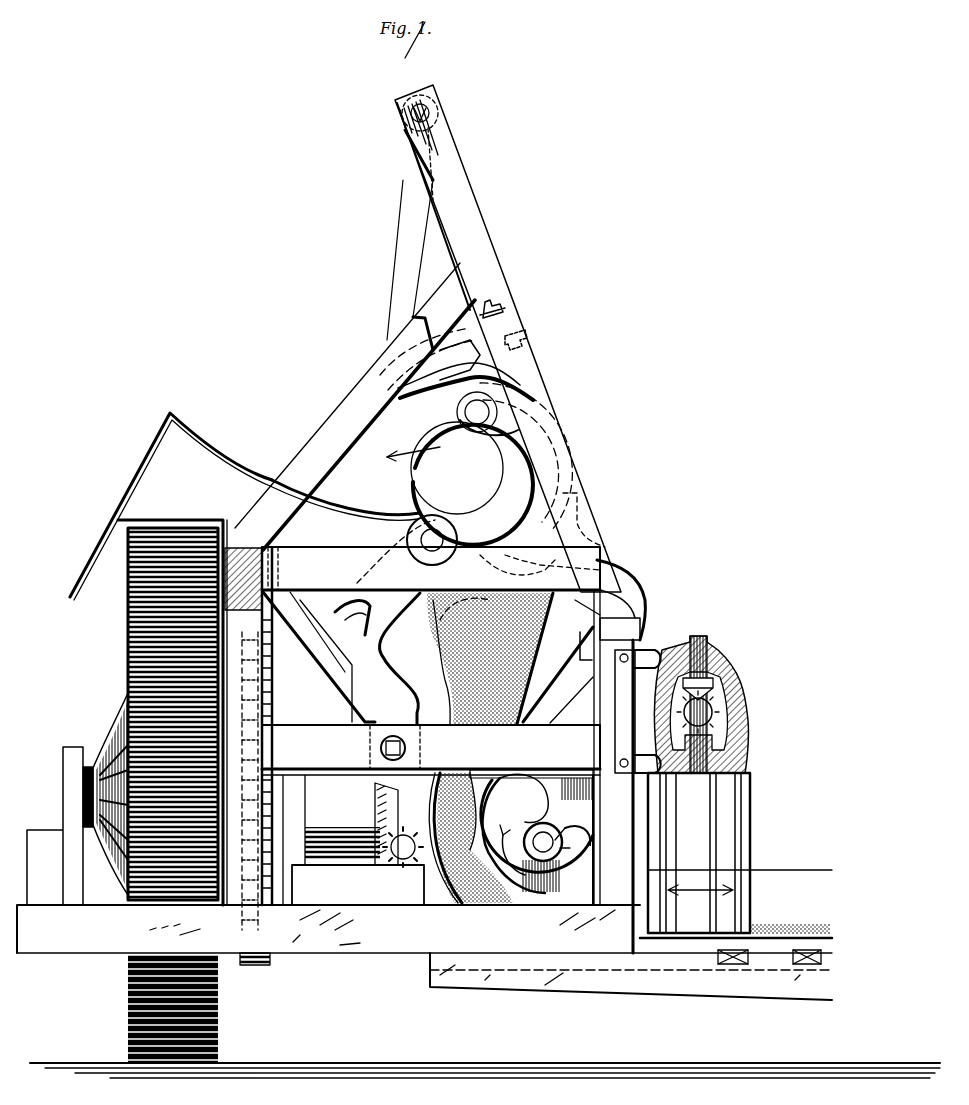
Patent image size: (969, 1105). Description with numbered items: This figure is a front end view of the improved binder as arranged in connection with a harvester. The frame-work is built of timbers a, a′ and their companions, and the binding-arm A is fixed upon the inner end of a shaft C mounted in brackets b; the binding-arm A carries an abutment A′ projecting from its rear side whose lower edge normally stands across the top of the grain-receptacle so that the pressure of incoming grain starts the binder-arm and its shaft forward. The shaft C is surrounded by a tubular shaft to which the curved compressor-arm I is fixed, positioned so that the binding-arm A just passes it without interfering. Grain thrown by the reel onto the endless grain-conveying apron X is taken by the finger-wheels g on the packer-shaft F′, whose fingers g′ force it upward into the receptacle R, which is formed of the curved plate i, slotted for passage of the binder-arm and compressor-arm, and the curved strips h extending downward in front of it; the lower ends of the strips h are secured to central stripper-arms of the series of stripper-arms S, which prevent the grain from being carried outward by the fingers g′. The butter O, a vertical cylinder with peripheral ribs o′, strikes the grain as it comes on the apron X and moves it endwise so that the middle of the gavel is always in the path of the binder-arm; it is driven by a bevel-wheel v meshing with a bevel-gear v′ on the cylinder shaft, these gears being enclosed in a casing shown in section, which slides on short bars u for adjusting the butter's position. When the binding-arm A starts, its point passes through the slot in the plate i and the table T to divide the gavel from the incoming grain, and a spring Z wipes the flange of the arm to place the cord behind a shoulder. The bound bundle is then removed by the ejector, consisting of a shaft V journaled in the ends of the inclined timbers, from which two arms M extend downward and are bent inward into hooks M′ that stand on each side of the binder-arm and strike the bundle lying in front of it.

The frame timber a is at (424, 760).
The frame timber a′ is at (355, 492).
The binding-arm A is at (472, 483).
The abutment A′ is at (505, 556).
The bracket b is at (359, 618).
The shaft C is at (435, 533).
The packer-shaft F′ is at (535, 828).
The finger-wheel g is at (512, 850).
The finger g′ is at (471, 838).
The curved strip h is at (510, 530).
The curved plate i is at (445, 684).
The compressor-arm I is at (410, 468).
The ejector arm M is at (400, 296).
The hook M′ is at (543, 403).
The butter O is at (740, 800).
The rib o′ is at (700, 853).
The receptacle R is at (399, 658).
The stripper-arm S is at (580, 690).
The table T is at (223, 738).
The short bar u is at (638, 711).
The bevel-wheel v is at (722, 713).
The bevel-gear v′ is at (720, 690).
The shaft V is at (420, 147).
The grain-conveying apron X is at (478, 987).
The spring Z is at (624, 590).